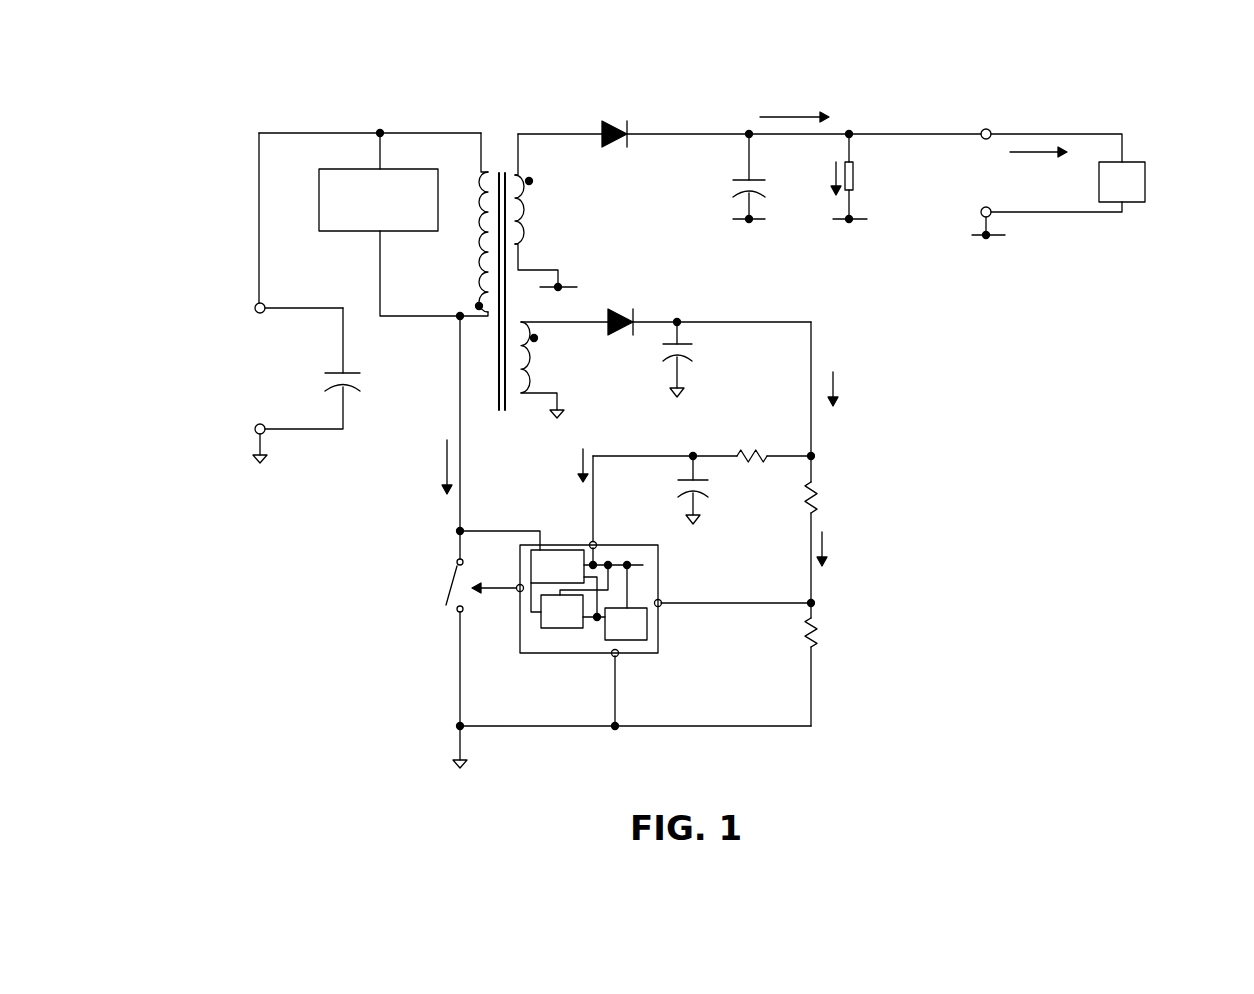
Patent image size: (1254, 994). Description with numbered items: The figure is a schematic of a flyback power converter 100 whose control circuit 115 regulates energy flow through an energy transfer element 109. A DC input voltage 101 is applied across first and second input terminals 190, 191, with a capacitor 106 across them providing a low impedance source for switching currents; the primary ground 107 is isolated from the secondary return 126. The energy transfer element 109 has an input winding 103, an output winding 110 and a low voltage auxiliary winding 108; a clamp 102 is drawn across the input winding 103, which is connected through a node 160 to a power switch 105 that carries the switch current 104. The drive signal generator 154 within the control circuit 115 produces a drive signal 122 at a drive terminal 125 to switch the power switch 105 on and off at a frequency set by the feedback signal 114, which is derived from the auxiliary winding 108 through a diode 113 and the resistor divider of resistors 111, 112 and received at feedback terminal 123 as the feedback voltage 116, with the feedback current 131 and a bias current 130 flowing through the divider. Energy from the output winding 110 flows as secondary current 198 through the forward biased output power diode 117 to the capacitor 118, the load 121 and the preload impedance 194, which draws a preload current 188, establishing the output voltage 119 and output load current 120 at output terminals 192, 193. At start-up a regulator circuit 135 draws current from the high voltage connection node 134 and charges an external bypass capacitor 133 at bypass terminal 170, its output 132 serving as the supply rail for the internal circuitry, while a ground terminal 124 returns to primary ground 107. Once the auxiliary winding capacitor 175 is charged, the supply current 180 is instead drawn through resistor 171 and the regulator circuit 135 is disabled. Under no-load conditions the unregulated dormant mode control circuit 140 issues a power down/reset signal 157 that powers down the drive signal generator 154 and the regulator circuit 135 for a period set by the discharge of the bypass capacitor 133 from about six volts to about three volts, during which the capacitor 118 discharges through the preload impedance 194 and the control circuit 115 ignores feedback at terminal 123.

The power converter 100 is at (255, 87).
The DC input voltage 101 is at (232, 387).
The clamp circuit 102 is at (345, 238).
The input winding 103 is at (478, 195).
The switch current ID 104 is at (445, 452).
The power switch 105 is at (450, 580).
The capacitor 106 is at (332, 378).
The primary ground 107 is at (470, 770).
The auxiliary winding 108 is at (537, 356).
The energy transfer element 109 is at (503, 128).
The output winding 110 is at (530, 201).
The resistor 111 is at (800, 500).
The resistor 112 is at (822, 632).
The bias diode 113 is at (620, 306).
The feedback signal 114 is at (710, 598).
The control circuit 115 is at (515, 650).
The feedback voltage VFB 116 is at (740, 685).
The output power diode 117 is at (633, 142).
The capacitor 118 is at (757, 178).
The output voltage 119 is at (943, 190).
The output load current 120 is at (1037, 183).
The load 121 is at (1146, 168).
The drive signal 122 is at (503, 593).
The feedback terminal 123 is at (665, 598).
The ground terminal 124 is at (625, 660).
The drive terminal 125 is at (518, 580).
The secondary return 126 is at (748, 226).
The feedback bias current IFBBIAS 130 is at (878, 402).
The feedback current 131 is at (853, 532).
The output of regulator circuit 132 is at (620, 563).
The bypass capacitor 133 is at (708, 487).
The high voltage connection node 134 is at (455, 527).
The regulator circuit 135 is at (567, 555).
The unregulated dormant mode control circuit 140 is at (645, 622).
The drive signal generator 154 is at (556, 623).
The power down/reset signal 157 is at (600, 630).
The primary winding node 160 is at (457, 325).
The bypass terminal 170 is at (591, 540).
The resistor 171 is at (745, 443).
The auxiliary winding capacitor 175 is at (697, 358).
The supply current 180 is at (545, 462).
The zero power load current IZPL 188 is at (822, 220).
The first input terminal 190 is at (250, 318).
The second input terminal 191 is at (252, 450).
The output terminal 192 is at (992, 128).
The output terminal 193 is at (978, 228).
The preload impedance 194 is at (856, 176).
The secondary current ISEC 198 is at (820, 92).